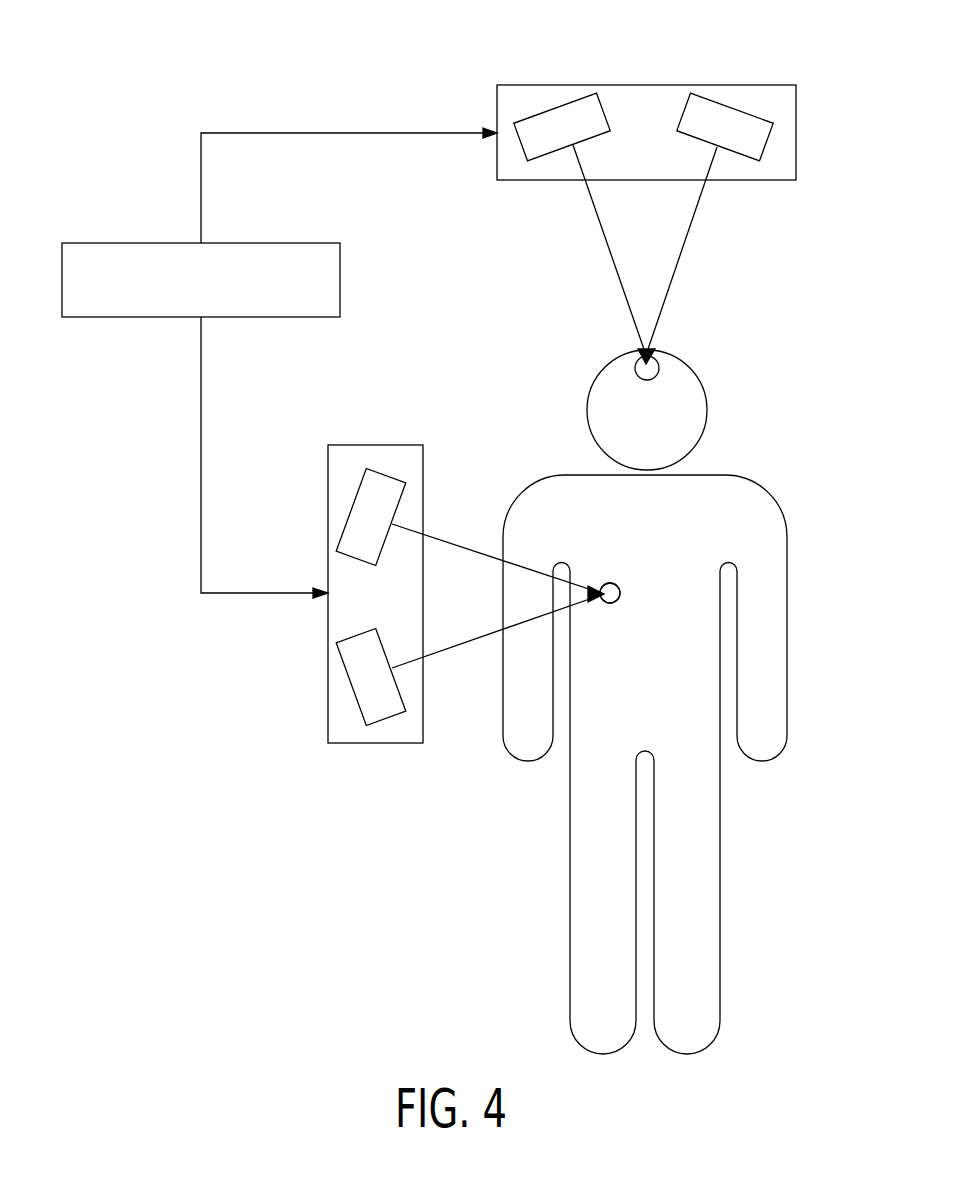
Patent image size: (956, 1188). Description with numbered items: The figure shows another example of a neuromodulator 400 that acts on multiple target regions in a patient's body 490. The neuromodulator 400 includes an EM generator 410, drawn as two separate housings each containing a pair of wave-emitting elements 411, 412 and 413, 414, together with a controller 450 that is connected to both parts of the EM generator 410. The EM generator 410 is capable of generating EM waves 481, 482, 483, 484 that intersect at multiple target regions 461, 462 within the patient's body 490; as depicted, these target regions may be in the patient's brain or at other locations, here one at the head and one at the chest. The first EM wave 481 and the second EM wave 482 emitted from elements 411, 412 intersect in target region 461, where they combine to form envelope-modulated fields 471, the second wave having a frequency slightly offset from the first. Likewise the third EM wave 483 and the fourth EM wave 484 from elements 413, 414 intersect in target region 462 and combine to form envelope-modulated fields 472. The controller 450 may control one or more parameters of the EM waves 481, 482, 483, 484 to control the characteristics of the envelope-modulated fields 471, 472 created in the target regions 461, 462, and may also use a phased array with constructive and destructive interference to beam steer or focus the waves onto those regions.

The neuromodulator 400 is at (250, 88).
The EM generator 410 is at (497, 165).
The sensor 411 is at (576, 97).
The sensor 412 is at (705, 97).
The sensor 413 is at (348, 513).
The sensor 414 is at (340, 655).
The controller 450 is at (255, 243).
The target region 461 is at (642, 380).
The target region 462 is at (620, 600).
The envelope-modulated fields 471 is at (658, 363).
The envelope-modulated fields 472 is at (612, 584).
The first EM wave 481 is at (591, 205).
The second EM wave 482 is at (692, 235).
The third EM wave 483 is at (437, 535).
The fourth EM wave 484 is at (432, 657).
The patient's body 490 is at (770, 512).